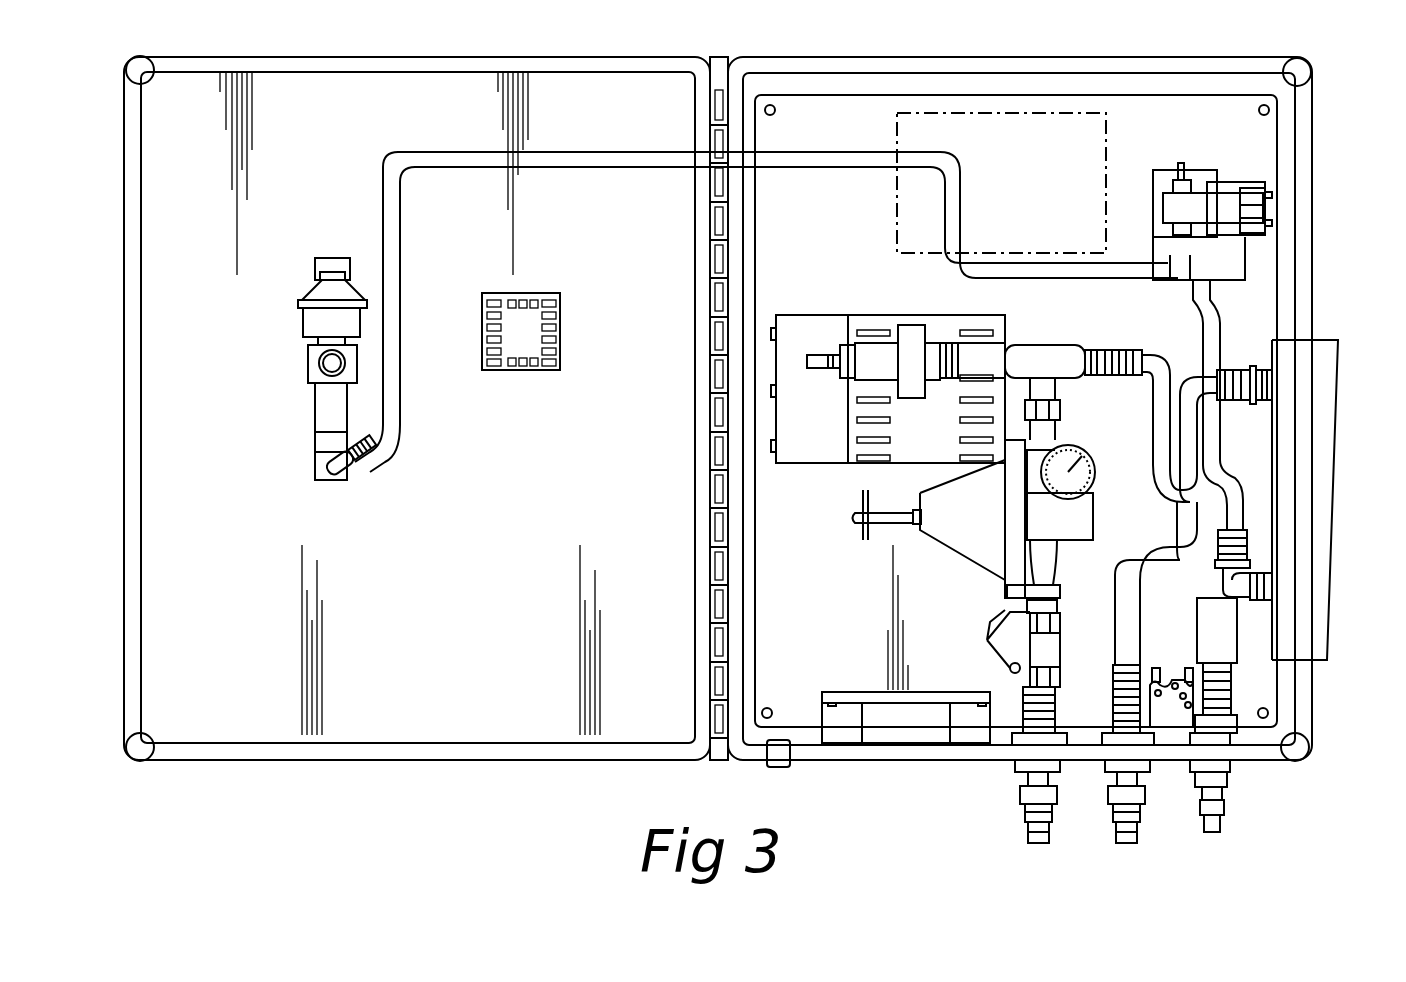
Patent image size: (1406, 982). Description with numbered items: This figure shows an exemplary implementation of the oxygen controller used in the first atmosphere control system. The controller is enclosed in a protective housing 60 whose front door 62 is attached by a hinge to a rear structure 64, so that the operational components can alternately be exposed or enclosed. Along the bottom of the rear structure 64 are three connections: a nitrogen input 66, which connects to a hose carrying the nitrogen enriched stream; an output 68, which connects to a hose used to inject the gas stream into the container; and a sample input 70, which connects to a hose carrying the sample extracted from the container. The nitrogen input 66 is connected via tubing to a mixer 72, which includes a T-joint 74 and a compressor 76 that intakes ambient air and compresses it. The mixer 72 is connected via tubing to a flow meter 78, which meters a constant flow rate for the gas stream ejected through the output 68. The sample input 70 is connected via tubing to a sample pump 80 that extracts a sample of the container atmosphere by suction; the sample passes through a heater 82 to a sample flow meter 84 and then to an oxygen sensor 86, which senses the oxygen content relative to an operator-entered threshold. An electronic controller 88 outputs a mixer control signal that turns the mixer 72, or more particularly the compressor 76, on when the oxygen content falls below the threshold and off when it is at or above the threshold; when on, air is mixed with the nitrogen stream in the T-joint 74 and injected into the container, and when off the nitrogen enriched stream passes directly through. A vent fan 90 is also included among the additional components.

The protective housing 60 is at (748, 55).
The front door 62 is at (460, 62).
The rear structure 64 is at (1165, 62).
The nitrogen input 66 is at (1035, 832).
The output 68 is at (1122, 832).
The sample input 70 is at (1203, 825).
The mixer 72 is at (845, 487).
The T-joint 74 is at (1078, 368).
The compressor 76 is at (946, 325).
The flow meter 78 is at (1320, 445).
The sample pump 80 is at (1228, 172).
The heater 82 is at (897, 145).
The sample flow meter 84 is at (322, 413).
The oxygen sensor 86 is at (315, 318).
The electronic controller 88 is at (540, 330).
The vent fan 90 is at (918, 735).